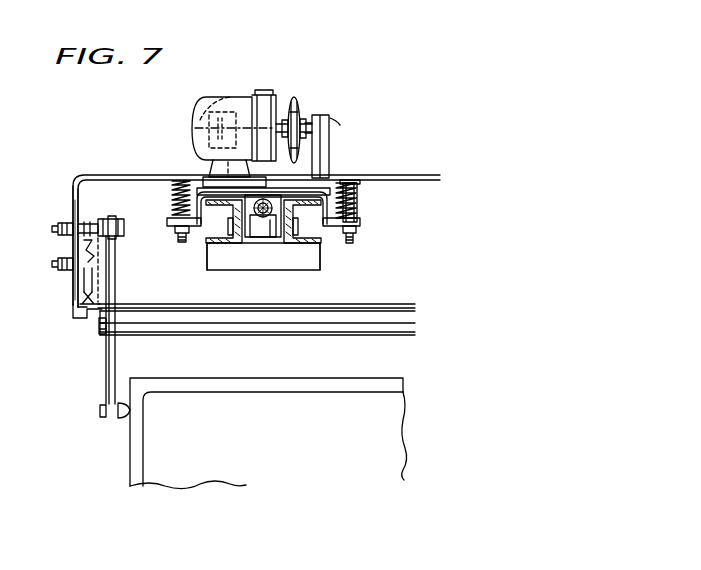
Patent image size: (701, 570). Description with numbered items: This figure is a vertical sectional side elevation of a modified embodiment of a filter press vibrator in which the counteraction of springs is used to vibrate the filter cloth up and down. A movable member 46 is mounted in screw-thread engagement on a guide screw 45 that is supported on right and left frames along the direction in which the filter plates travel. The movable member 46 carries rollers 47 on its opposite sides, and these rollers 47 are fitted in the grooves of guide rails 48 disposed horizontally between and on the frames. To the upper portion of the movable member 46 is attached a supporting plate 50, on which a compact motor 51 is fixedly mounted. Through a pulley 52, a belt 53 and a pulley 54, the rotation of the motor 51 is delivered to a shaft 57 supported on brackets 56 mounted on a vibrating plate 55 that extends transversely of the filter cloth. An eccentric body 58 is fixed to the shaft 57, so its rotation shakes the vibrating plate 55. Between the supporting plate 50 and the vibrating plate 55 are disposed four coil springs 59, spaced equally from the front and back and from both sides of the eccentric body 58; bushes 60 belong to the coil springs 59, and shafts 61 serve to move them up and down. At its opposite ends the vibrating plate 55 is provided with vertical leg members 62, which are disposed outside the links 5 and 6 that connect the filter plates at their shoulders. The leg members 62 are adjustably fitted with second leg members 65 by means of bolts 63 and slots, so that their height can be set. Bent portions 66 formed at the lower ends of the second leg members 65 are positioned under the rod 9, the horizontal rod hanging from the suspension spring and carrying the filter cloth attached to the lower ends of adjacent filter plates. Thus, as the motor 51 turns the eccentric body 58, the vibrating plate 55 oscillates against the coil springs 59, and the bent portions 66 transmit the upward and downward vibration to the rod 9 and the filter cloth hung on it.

The link 5 is at (117, 244).
The link 6 is at (116, 268).
The rod 9 is at (99, 326).
The guide screw 45 is at (261, 220).
The movable member 46 is at (273, 225).
The rollers 47 is at (232, 230).
The guide rails 48 is at (238, 243).
The supporting plate 50 is at (294, 190).
The compact motor 51 is at (225, 127).
The pulley 52 is at (306, 128).
The belt 53 is at (300, 124).
The pulley 54 is at (294, 98).
The vibrating plate 55 is at (121, 175).
The brackets 56 is at (210, 124).
The shaft 57 is at (236, 97).
The eccentric body 58 is at (261, 90).
The coil springs 59 is at (169, 203).
The bushes 60 is at (358, 213).
The shafts 61 is at (354, 190).
The vertical leg members 62 is at (73, 193).
The bolts 63 is at (58, 229).
The second leg members 65 is at (73, 296).
The bent portions 66 is at (76, 319).